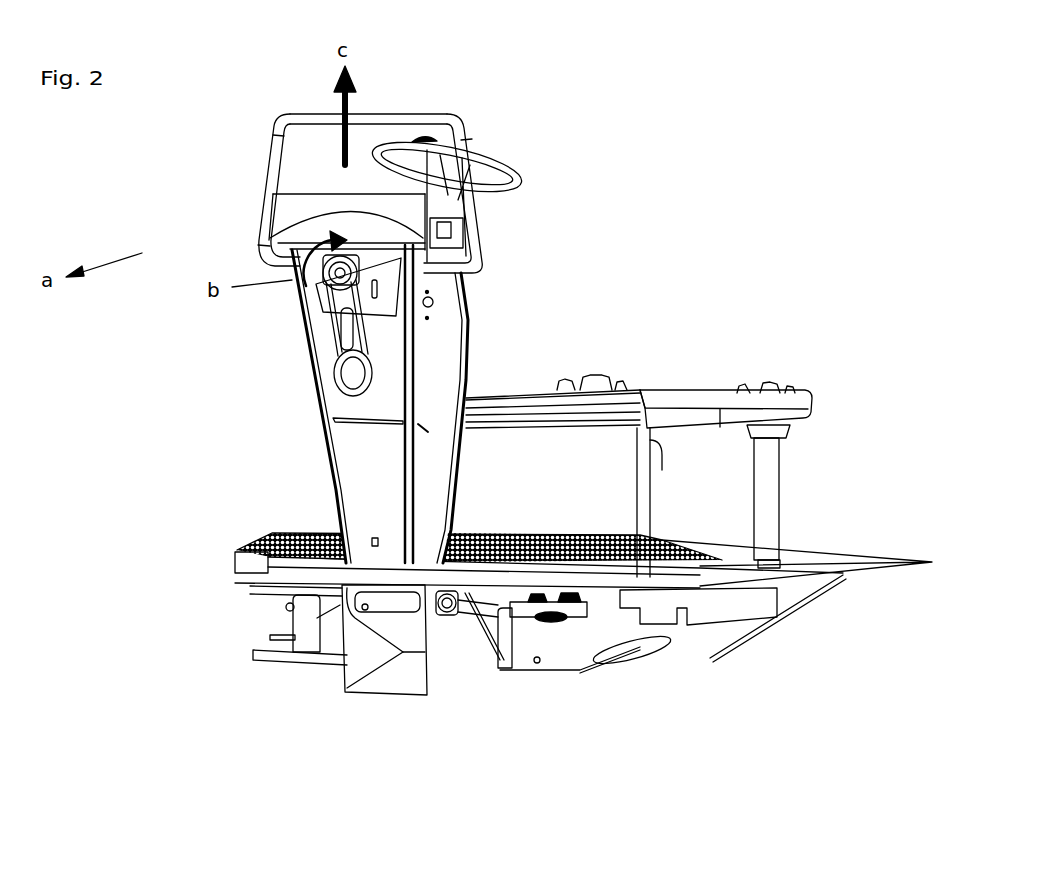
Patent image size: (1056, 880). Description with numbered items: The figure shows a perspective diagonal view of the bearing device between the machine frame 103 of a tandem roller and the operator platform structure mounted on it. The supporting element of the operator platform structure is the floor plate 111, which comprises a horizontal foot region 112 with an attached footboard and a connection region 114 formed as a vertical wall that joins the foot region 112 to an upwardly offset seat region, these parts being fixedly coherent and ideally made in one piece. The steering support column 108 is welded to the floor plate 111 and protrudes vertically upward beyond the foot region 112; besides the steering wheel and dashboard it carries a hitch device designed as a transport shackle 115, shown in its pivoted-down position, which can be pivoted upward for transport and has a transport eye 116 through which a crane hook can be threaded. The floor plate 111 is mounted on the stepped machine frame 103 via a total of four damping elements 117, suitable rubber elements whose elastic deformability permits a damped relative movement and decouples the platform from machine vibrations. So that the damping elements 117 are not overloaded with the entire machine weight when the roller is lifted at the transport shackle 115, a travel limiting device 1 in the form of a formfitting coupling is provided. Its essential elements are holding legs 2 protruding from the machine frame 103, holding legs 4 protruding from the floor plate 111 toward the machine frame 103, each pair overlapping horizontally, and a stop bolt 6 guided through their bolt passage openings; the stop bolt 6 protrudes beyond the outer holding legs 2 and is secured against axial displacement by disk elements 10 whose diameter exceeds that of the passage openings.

The travel limiting device 1 is at (320, 750).
The holding legs 2 is at (377, 640).
The holding legs 4 is at (367, 617).
The stop bolt 6 is at (395, 610).
The disk elements 10 is at (458, 622).
The machine frame 103 is at (793, 597).
The steering support column 108 is at (355, 480).
The floor plate 111 is at (835, 573).
The foot region 112 is at (662, 598).
The connection region 114 is at (652, 446).
The transport shackle 115 is at (357, 374).
The transport eye 116 is at (367, 368).
The damping elements 117 is at (603, 382).